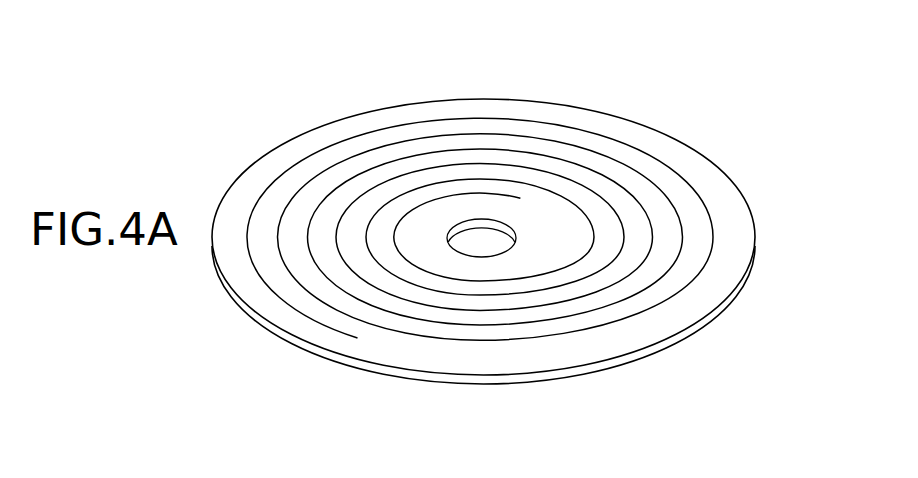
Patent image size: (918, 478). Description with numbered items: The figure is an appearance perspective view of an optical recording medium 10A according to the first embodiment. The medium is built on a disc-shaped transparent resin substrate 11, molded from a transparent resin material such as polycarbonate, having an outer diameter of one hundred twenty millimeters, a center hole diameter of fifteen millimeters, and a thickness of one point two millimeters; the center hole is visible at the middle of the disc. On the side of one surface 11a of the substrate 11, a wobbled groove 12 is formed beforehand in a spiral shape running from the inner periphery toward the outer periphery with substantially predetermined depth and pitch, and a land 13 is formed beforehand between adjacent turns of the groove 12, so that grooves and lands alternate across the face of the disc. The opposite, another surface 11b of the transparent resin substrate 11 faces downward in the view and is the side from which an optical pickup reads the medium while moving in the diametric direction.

The optical recording medium 10A is at (288, 95).
The transparent resin substrate 11 is at (640, 114).
The one surface 11a is at (720, 186).
The another surface 11b is at (593, 372).
The wobbled groove 12 is at (623, 320).
The land 13 is at (695, 246).